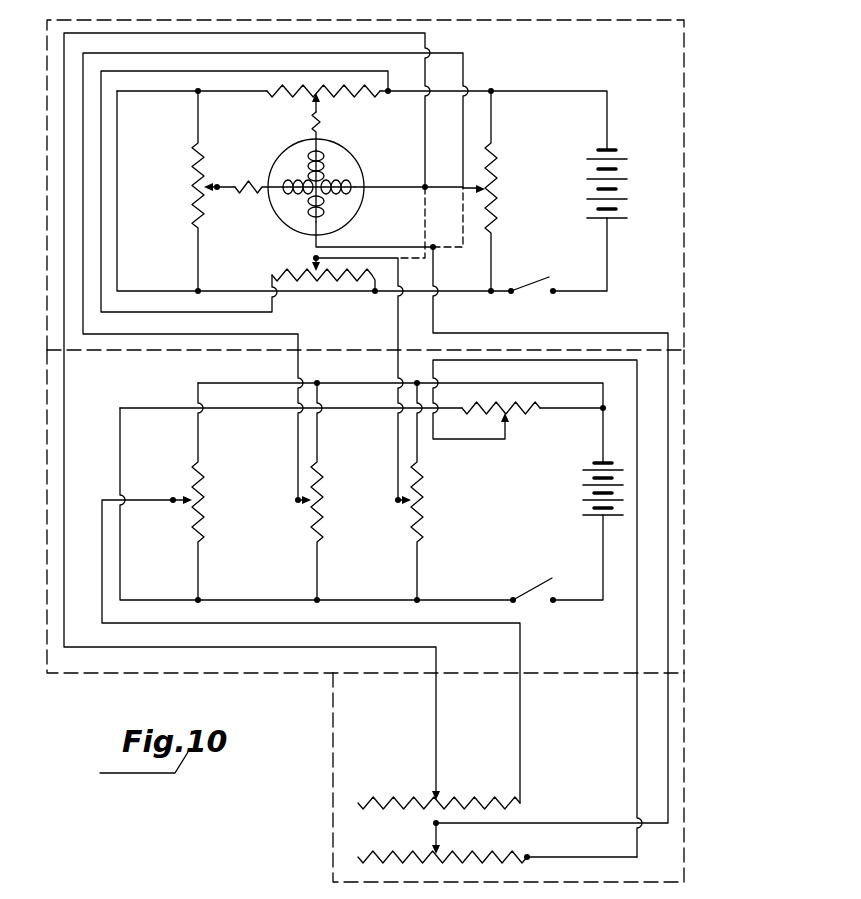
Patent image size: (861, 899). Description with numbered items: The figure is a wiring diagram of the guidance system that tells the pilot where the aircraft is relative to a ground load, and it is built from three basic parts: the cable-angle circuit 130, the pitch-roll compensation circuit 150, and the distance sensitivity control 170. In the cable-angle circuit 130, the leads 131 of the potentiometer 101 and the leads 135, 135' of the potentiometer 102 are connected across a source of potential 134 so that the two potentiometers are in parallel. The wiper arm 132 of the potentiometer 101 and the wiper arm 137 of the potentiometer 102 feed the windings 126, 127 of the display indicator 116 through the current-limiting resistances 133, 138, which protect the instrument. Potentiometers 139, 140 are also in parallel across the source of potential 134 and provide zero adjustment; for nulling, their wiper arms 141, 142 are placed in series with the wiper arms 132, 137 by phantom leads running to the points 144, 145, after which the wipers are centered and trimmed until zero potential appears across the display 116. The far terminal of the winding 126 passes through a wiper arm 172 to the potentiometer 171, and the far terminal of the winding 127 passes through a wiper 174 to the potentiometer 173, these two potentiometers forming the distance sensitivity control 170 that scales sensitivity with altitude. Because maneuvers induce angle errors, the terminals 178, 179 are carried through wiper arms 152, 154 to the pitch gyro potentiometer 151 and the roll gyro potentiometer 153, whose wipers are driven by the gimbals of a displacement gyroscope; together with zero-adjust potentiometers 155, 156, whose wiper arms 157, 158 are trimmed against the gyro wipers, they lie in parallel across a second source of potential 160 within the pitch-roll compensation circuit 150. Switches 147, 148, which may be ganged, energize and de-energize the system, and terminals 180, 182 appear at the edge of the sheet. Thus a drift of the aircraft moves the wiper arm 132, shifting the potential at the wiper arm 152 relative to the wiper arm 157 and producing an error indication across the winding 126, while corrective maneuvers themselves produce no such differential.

The potentiometer 101 is at (167, 191).
The potentiometer 102 is at (318, 62).
The display indicator 116 is at (316, 182).
The winding 126 is at (296, 205).
The winding 127 is at (327, 208).
The cable-angle circuit 130 is at (686, 73).
The lead 131 is at (177, 191).
The wiper arm 132 is at (217, 190).
The resistance 133 is at (242, 184).
The source of potential 134 is at (614, 213).
The lead 135 is at (406, 111).
The lead 135' is at (295, 104).
The wiper arm 137 is at (320, 100).
The resistance 138 is at (322, 128).
The potentiometer 139 is at (523, 191).
The potentiometer 140 is at (326, 296).
The wiper arm 141 is at (463, 200).
The wiper arm 142 is at (312, 262).
The point 144 is at (427, 187).
The point 145 is at (434, 252).
The switch 147 is at (547, 278).
The switch 148 is at (534, 580).
The pitch-roll compensation circuit 150 is at (686, 386).
The pitch gyro potentiometer 151 is at (217, 491).
The wiper arm 152 is at (185, 494).
The roll gyro potentiometer 153 is at (510, 430).
The wiper arm 154 is at (502, 432).
The potentiometer 155 is at (456, 491).
The potentiometer 156 is at (344, 491).
The wiper arm 157 is at (396, 506).
The wiper arm 158 is at (292, 506).
The source of potential 160 is at (582, 492).
The distance sensitivity control 170 is at (686, 700).
The potentiometer 171 is at (439, 782).
The wiper arm 172 is at (440, 782).
The potentiometer 173 is at (437, 841).
The wiper 174 is at (441, 840).
The terminal 178 is at (525, 800).
The terminal 179 is at (531, 854).
The terminal 180 is at (194, 888).
The terminal 182 is at (126, 889).